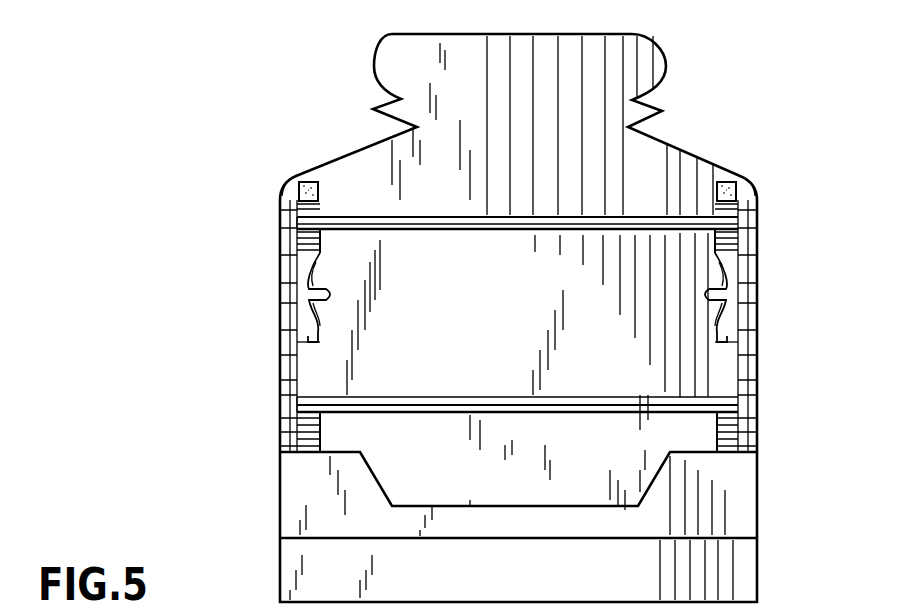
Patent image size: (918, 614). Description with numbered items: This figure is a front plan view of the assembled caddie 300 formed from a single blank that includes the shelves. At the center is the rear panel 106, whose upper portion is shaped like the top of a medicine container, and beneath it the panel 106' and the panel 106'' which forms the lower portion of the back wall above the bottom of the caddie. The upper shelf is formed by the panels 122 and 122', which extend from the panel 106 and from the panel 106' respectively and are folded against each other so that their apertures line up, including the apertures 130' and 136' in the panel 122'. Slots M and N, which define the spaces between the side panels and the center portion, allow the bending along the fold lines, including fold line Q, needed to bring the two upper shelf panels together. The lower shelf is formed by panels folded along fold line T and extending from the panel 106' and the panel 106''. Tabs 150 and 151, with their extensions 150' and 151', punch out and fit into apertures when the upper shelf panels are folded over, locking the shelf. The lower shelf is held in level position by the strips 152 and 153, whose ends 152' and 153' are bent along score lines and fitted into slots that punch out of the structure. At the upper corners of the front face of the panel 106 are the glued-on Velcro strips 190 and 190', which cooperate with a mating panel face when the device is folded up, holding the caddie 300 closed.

The piston and seal assembly 300 is at (302, 33).
The rear panel 106 is at (552, 125).
The panel 106' is at (517, 313).
The panel forming lower portion of back wall 106'' is at (518, 497).
The upper shelf panel 122 is at (517, 205).
The upper shelf panel 122' is at (517, 386).
The Velcro strip 190 is at (249, 167).
The Velcro strip 190' is at (786, 166).
The tab extension 150' is at (260, 201).
The tab extension 151' is at (770, 200).
The tab 150 is at (261, 326).
The tab 151 is at (766, 326).
The aperture 136' is at (266, 297).
The aperture 130' is at (769, 297).
The strip end 152' is at (251, 378).
The strip 152 is at (261, 433).
The strip end 153' is at (779, 379).
The strip 153 is at (770, 434).
The fold line Q is at (374, 225).
The fold line T is at (392, 400).
The slot M is at (300, 340).
The slot N is at (738, 340).